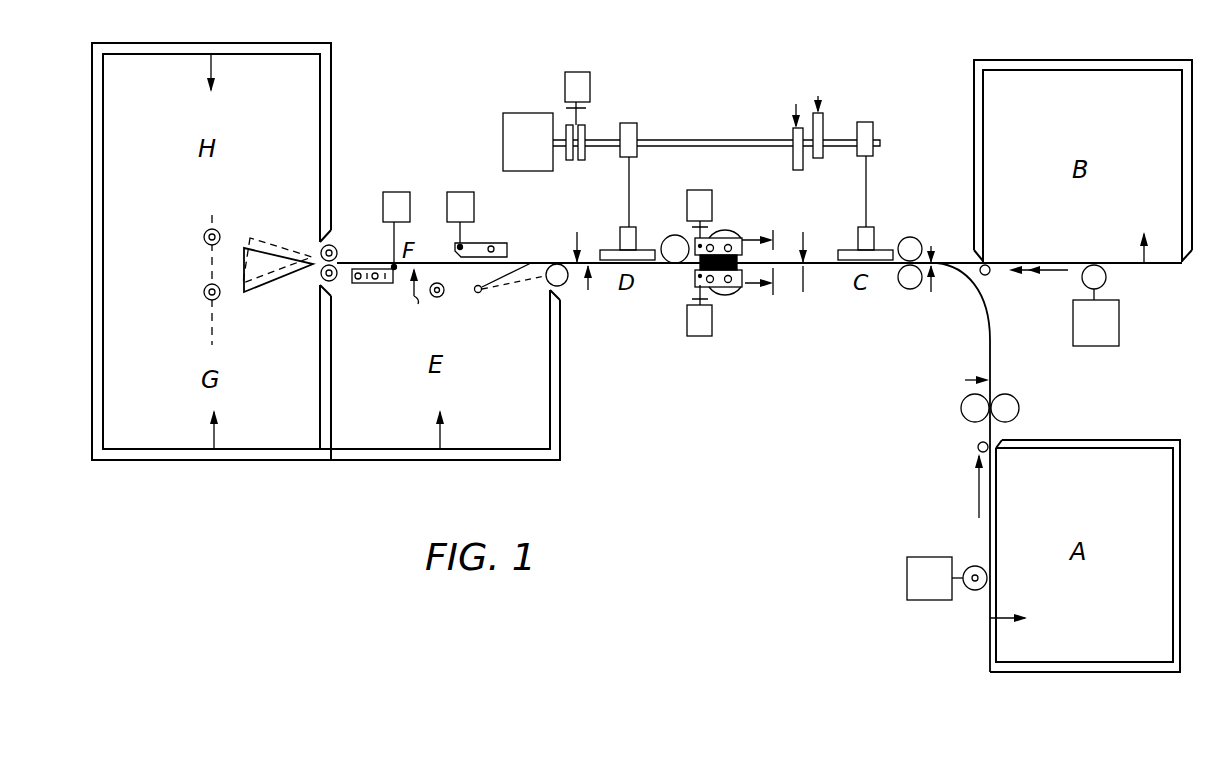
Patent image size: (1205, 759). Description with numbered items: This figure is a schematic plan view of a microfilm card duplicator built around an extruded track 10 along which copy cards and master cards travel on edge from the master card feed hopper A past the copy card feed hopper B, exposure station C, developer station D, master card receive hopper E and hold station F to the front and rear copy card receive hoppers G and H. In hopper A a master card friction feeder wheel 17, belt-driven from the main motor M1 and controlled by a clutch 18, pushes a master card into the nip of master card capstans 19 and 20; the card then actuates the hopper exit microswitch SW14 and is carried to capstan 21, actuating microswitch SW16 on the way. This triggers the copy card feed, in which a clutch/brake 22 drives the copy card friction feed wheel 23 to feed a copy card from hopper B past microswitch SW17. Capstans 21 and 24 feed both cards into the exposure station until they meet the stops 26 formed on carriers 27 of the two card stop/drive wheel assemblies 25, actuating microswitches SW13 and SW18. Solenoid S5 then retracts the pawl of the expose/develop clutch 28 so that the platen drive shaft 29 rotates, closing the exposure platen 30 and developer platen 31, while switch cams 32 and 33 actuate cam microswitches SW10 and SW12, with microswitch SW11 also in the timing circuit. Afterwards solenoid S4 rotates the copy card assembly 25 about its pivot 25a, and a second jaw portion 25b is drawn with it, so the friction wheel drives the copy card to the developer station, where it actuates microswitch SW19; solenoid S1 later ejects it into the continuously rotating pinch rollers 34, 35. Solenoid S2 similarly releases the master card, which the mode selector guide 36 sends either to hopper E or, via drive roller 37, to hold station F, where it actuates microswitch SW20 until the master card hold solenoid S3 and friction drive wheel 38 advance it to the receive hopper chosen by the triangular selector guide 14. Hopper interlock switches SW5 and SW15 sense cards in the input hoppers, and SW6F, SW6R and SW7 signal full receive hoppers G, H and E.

The extruded track 10 is at (516, 262).
The selector guide 14 is at (280, 280).
The master card friction feeder wheel 17 is at (970, 592).
The clutch 18 is at (935, 578).
The master card capstan 19 is at (962, 404).
The master card capstan 20 is at (1016, 398).
The capstan 21 is at (903, 283).
The clutch/brake 22 is at (1096, 317).
The copy card friction feed wheel 23 is at (1107, 278).
The capstan 24 is at (914, 238).
The card stop/drive wheel assembly 25 is at (741, 238).
The pivot 25a is at (726, 300).
The clamp jaws 25b is at (742, 268).
The stop 26 is at (697, 270).
The carrier 27 is at (712, 240).
The expose/develop clutch 28 is at (570, 161).
The exposure and developer platen drive shaft 29 is at (687, 139).
The exposure platen 30 is at (876, 228).
The developer platen 31 is at (640, 228).
The switch cam 32 is at (793, 166).
The switch cam 33 is at (818, 158).
The pinch roller 34 is at (336, 247).
The pinch roller 35 is at (336, 281).
The master card mode selector guide 36 is at (518, 287).
The drive roller 37 is at (566, 284).
The friction drive wheel 38 is at (381, 285).
The solenoid S1 is at (477, 211).
The solenoid S2 is at (697, 325).
The master card hold solenoid S3 is at (395, 217).
The solenoid S4 is at (697, 200).
The solenoid S5 is at (565, 84).
The main motor M1 is at (528, 142).
The hopper interlock switch SW5 is at (1143, 234).
The hopper interlock switch SW6R is at (241, 73).
The hopper interlock switch SW6F is at (243, 429).
The hopper interlock switch SW7 is at (464, 429).
The cam microswitch SW10 is at (772, 110).
The microswitch SW11 is at (588, 292).
The cam microswitch SW12 is at (824, 94).
The microswitch SW13 is at (803, 292).
The master card hopper exit microswitch SW14 is at (947, 382).
The hopper interlock switch SW15 is at (1021, 607).
The microswitch SW16 is at (938, 290).
The microswitch SW17 is at (949, 245).
The microswitch SW18 is at (816, 234).
The microswitch SW19 is at (582, 236).
The microswitch SW20 is at (417, 296).